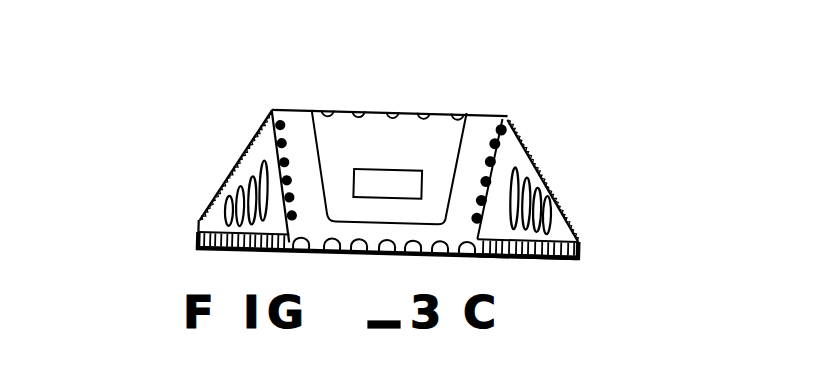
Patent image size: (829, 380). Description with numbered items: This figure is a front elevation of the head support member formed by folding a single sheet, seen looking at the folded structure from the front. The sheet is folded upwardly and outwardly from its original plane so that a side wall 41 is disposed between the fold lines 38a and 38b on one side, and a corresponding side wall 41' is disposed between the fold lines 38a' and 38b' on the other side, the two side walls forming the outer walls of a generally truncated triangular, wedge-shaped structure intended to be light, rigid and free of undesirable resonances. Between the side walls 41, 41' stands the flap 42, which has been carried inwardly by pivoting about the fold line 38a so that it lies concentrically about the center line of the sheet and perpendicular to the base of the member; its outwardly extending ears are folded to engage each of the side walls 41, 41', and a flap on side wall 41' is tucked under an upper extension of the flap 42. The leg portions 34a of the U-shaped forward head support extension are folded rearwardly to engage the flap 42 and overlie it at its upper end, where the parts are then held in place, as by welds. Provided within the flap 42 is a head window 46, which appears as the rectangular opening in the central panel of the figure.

The fold line 38b is at (221, 175).
The fold line 38a is at (360, 259).
The side wall 41 is at (260, 259).
The fold line 38a' is at (512, 273).
The side wall 41' is at (565, 252).
The leg portion 34a is at (470, 190).
The fold line 38b' is at (575, 181).
The flap 42 is at (512, 138).
The head window 46 is at (388, 176).